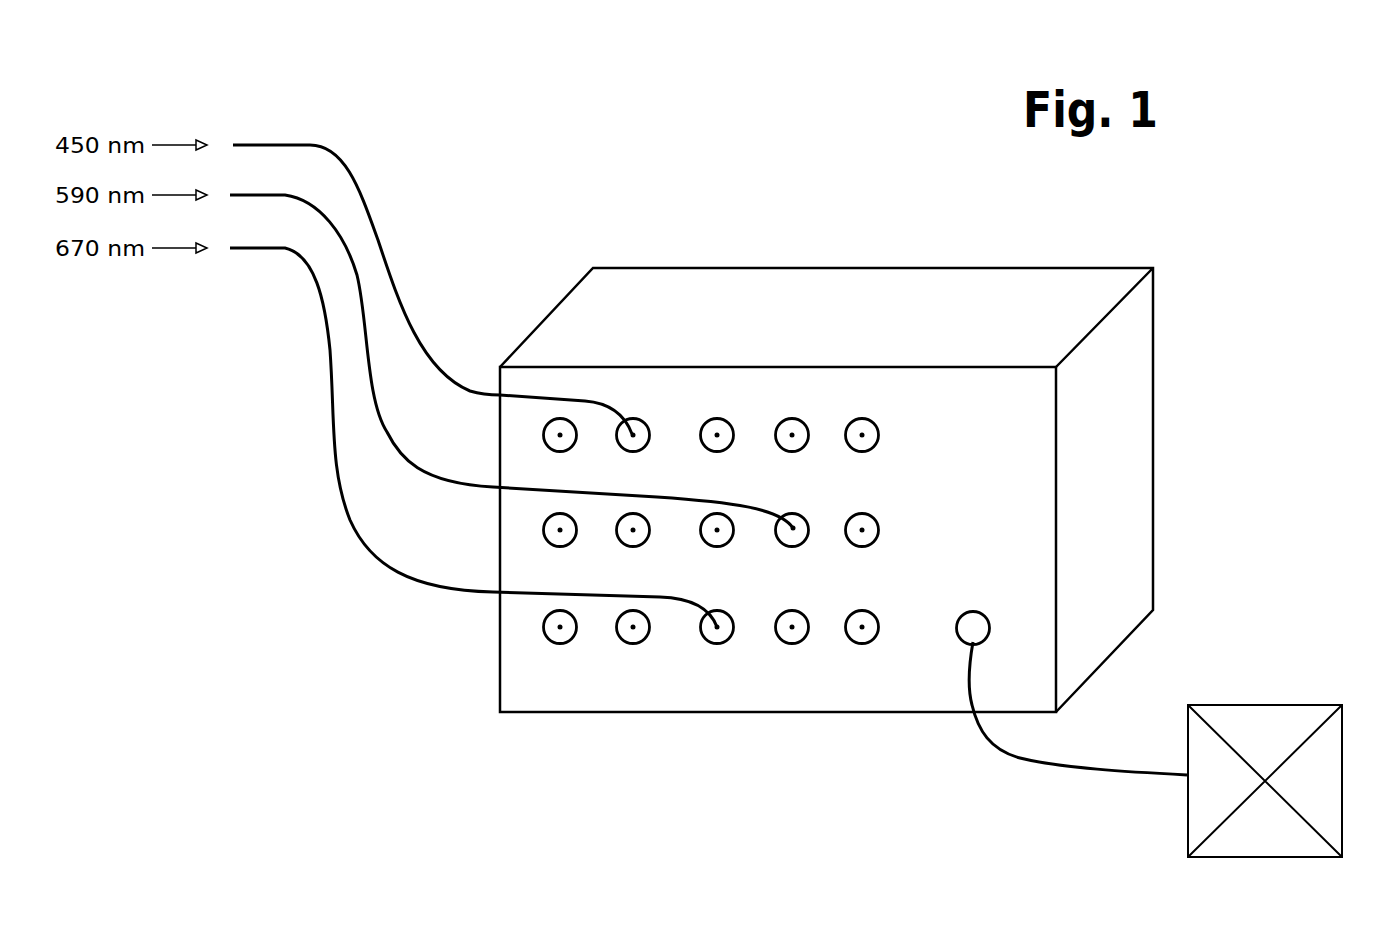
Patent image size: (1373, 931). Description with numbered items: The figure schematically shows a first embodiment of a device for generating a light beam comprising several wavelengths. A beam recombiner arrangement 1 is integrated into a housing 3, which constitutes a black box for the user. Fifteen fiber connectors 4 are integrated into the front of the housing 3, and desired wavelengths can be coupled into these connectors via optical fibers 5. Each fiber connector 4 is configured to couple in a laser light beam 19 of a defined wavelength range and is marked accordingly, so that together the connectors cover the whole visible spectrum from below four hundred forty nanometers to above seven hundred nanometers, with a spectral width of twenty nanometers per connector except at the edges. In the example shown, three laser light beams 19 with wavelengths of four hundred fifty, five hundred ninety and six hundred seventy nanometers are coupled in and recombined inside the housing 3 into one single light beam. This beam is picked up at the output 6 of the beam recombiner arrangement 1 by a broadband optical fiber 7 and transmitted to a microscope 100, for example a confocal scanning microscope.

The beam recombiner arrangement 1 is at (738, 220).
The housing 3 is at (1153, 365).
The fiber connector 4 is at (633, 627).
The optical fiber 5 is at (330, 413).
The output 6 is at (973, 628).
The broadband optical fiber 7 is at (1017, 760).
The laser light beam 19 is at (196, 145).
The microscope 100 is at (1282, 705).